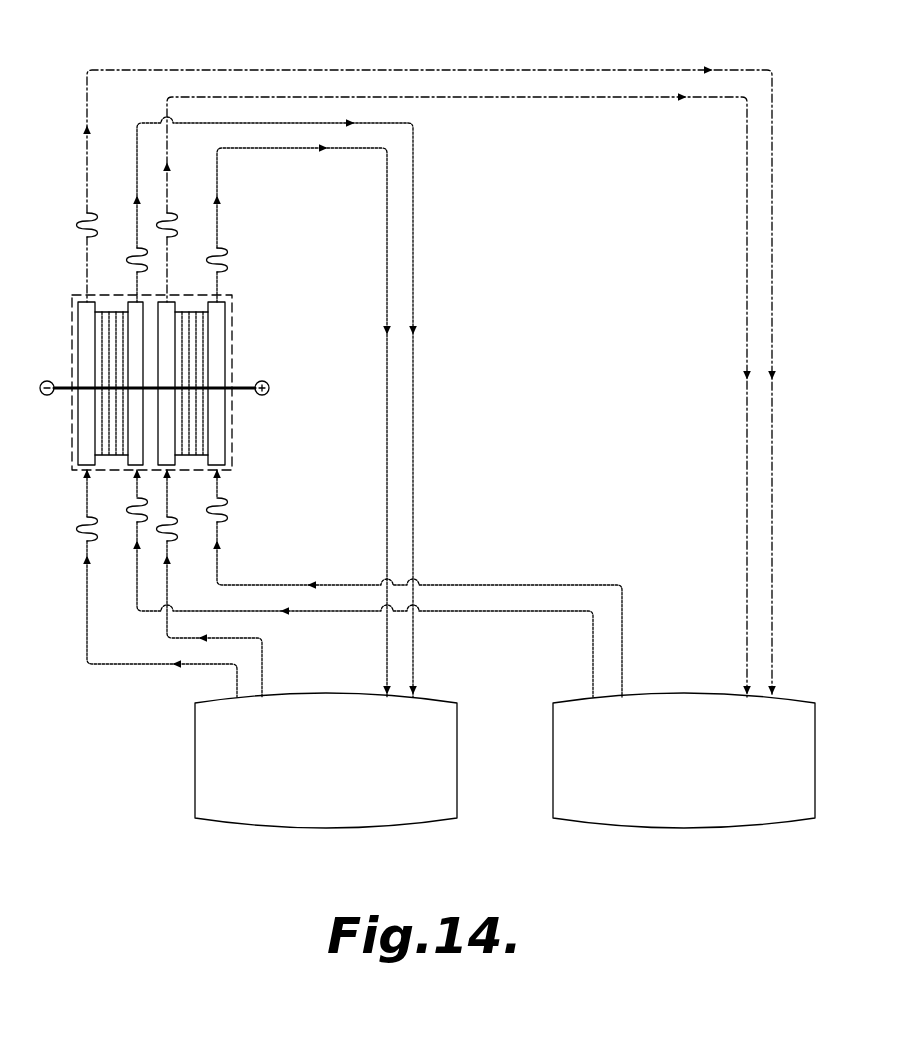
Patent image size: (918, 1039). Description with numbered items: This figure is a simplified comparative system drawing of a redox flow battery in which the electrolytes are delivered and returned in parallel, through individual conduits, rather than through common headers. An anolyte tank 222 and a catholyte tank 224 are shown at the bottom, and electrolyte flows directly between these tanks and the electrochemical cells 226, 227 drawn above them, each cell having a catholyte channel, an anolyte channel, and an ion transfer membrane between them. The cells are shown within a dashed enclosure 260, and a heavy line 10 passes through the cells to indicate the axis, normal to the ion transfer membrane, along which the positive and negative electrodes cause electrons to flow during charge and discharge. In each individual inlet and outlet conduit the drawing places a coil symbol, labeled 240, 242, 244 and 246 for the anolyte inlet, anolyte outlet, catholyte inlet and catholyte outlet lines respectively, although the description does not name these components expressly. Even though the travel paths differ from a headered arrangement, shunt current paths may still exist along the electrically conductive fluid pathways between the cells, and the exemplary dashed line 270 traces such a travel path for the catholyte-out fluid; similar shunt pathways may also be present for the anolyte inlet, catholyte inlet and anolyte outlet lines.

The line 10 is at (238, 384).
The anolyte tank 222 is at (330, 694).
The catholyte tank 224 is at (685, 694).
The cell 226 is at (75, 436).
The second cell stack 227 is at (232, 424).
The anolyte inlet pump 240 is at (87, 508).
The anolyte outlet pump 242 is at (136, 283).
The catholyte inlet pump 244 is at (137, 500).
The catholyte outlet pump 246 is at (87, 283).
The cell stack enclosure 260 is at (233, 412).
The dashed line 270 is at (87, 72).